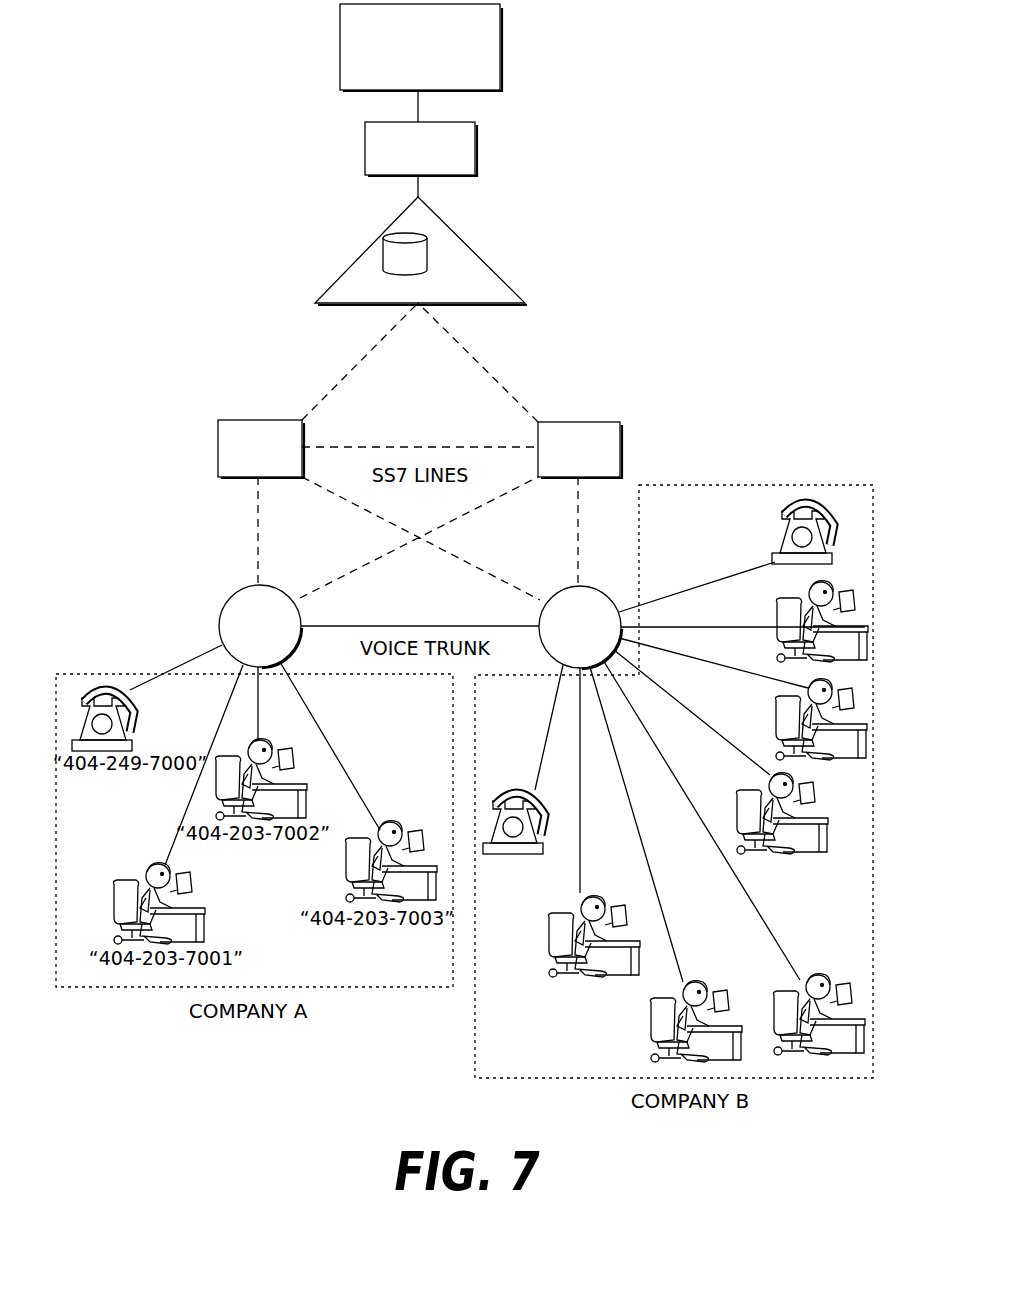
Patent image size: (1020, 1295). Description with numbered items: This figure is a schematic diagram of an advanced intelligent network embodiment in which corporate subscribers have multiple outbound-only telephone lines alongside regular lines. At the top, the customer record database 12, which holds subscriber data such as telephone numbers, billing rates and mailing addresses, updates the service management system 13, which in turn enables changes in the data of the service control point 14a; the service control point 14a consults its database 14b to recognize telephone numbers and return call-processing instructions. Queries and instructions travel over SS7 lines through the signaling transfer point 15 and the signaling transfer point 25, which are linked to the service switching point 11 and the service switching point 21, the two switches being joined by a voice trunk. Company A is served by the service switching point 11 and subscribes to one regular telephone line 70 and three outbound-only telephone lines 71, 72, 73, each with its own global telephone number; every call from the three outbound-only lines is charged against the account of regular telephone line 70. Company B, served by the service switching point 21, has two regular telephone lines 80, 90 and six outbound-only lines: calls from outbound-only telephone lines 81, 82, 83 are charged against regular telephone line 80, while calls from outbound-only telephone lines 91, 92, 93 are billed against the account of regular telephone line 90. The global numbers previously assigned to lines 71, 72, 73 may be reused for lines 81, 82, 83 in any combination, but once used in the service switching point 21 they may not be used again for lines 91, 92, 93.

The customer record database 12 is at (500, 40).
The service management system 13 is at (475, 143).
The service control point 14a is at (490, 262).
The database 14b is at (427, 250).
The signaling transfer point 15 is at (218, 446).
The signaling transfer point 25 is at (620, 443).
The service switching point 11 is at (228, 600).
The service switching point 21 is at (586, 587).
The regular telephone line 70 is at (145, 688).
The outbound-only telephone line 71 is at (165, 858).
The outbound-only telephone line 72 is at (258, 711).
The outbound-only telephone line 73 is at (360, 790).
The regular telephone line 80 is at (750, 567).
The outbound-only telephone line 81 is at (725, 628).
The outbound-only telephone line 82 is at (755, 672).
The outbound-only telephone line 83 is at (722, 745).
The regular telephone line 90 is at (532, 770).
The outbound-only telephone line 91 is at (587, 893).
The outbound-only telephone line 92 is at (680, 960).
The outbound-only telephone line 93 is at (772, 945).